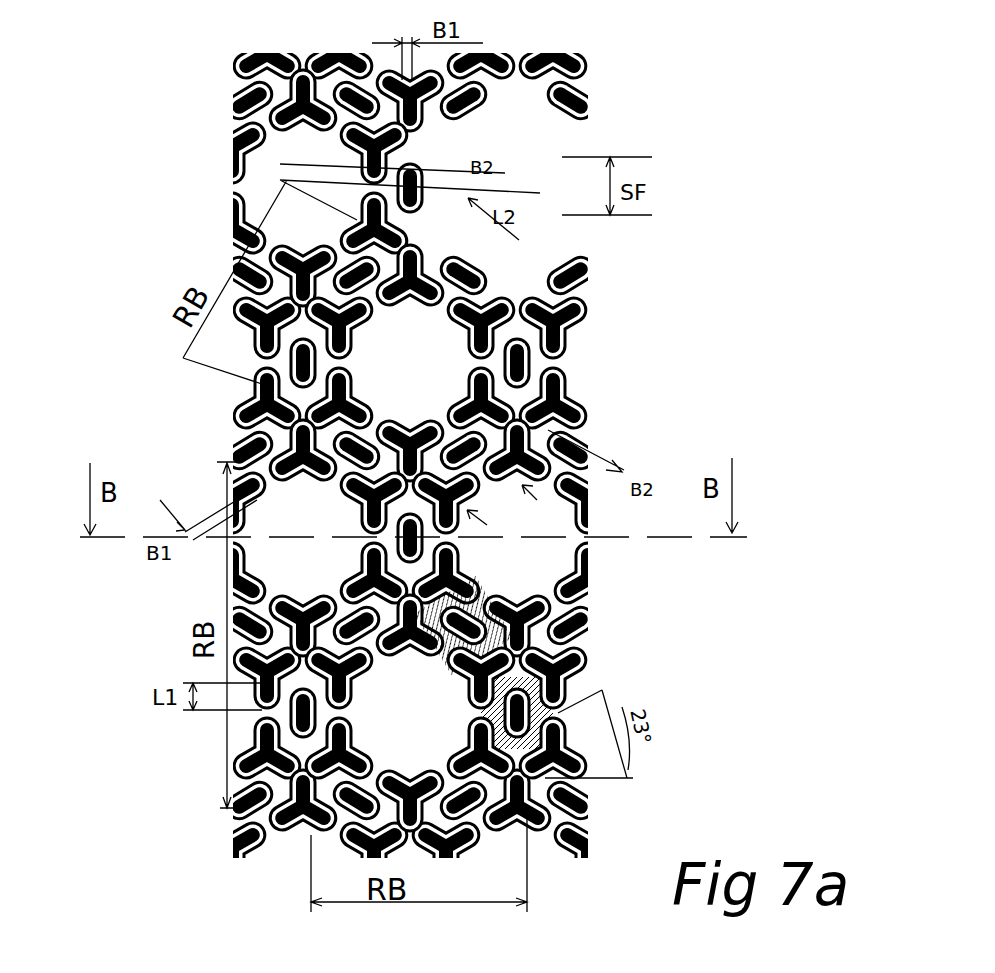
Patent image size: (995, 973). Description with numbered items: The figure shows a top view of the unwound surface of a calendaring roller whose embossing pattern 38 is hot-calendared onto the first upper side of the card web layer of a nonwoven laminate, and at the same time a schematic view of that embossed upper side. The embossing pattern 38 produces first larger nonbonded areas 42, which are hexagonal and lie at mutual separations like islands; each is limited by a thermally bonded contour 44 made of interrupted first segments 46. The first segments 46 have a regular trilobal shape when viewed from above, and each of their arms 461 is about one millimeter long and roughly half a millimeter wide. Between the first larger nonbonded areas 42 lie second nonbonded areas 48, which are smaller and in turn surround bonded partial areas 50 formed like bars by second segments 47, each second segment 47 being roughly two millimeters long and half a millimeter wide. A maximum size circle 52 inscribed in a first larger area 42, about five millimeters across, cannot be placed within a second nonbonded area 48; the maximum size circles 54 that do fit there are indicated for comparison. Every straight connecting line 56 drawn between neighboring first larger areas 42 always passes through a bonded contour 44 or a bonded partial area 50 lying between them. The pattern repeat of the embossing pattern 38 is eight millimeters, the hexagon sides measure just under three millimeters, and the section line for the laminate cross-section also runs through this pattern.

The embossing pattern 38 is at (543, 103).
The straight connecting line 56 is at (297, 163).
The maximum size circle 52 is at (440, 305).
The first larger nonbonded area 42 is at (295, 537).
The maximum size circle 54 is at (237, 428).
The bonded partial area 50 is at (590, 560).
The second segment 47 is at (644, 574).
The second nonbonded area 48 is at (580, 677).
The thermally bonded contour 44 is at (466, 685).
The first segment 46 is at (360, 683).
The arm 461 is at (467, 722).